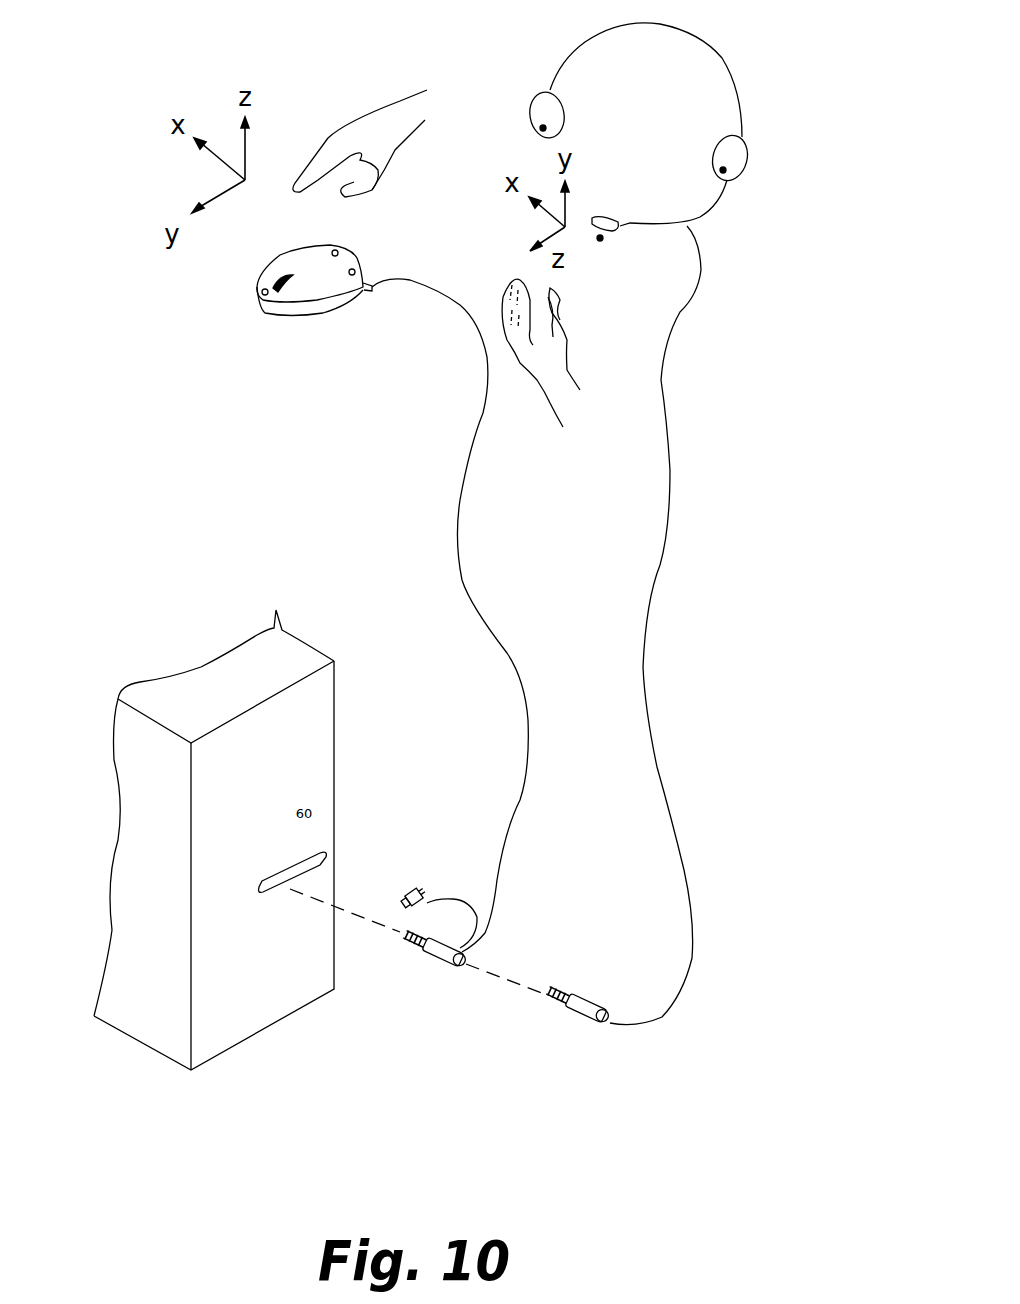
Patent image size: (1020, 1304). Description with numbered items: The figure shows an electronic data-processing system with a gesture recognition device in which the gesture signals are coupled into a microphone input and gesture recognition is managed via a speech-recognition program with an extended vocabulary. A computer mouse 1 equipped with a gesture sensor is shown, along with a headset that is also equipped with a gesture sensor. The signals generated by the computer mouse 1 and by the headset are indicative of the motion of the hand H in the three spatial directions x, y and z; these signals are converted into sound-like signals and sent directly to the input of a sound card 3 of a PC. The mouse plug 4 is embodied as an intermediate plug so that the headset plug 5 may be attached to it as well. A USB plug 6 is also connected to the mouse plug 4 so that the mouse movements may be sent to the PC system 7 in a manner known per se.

The computer mouse 1 is at (314, 301).
The sound card 3 is at (300, 862).
The mouse plug 4 is at (445, 960).
The plug connector 5 is at (590, 1023).
The USB plug 6 is at (427, 893).
The PC system 7 is at (296, 663).
The hand H is at (398, 113).